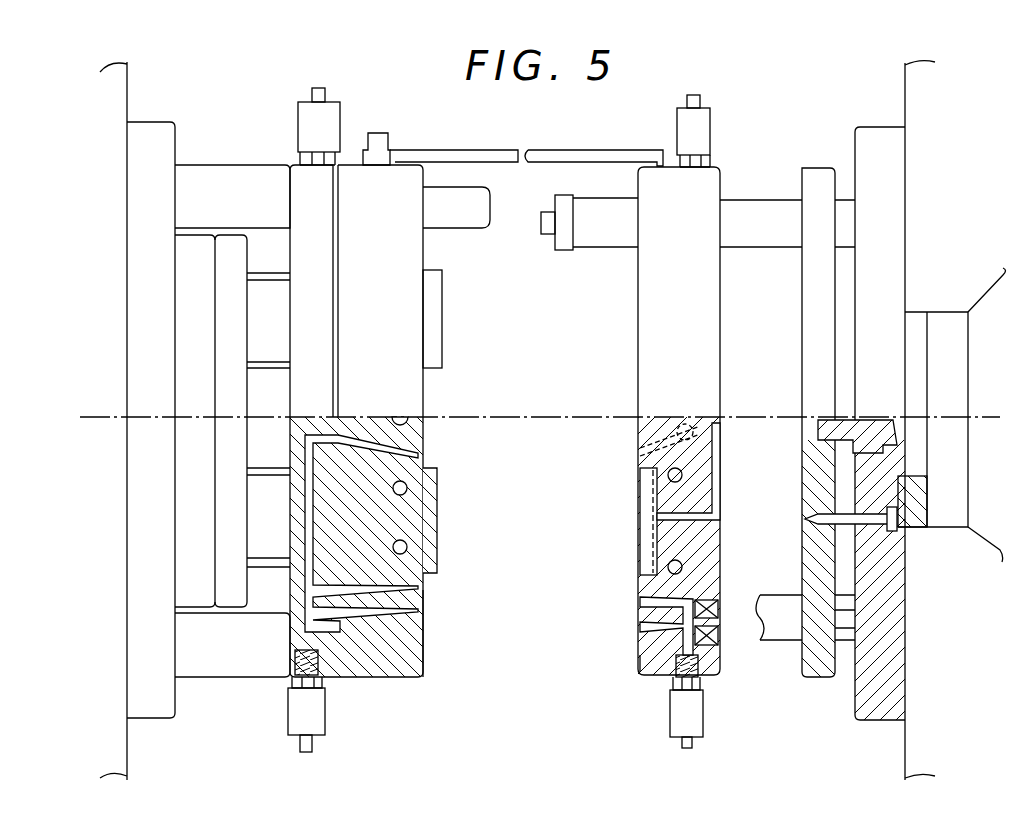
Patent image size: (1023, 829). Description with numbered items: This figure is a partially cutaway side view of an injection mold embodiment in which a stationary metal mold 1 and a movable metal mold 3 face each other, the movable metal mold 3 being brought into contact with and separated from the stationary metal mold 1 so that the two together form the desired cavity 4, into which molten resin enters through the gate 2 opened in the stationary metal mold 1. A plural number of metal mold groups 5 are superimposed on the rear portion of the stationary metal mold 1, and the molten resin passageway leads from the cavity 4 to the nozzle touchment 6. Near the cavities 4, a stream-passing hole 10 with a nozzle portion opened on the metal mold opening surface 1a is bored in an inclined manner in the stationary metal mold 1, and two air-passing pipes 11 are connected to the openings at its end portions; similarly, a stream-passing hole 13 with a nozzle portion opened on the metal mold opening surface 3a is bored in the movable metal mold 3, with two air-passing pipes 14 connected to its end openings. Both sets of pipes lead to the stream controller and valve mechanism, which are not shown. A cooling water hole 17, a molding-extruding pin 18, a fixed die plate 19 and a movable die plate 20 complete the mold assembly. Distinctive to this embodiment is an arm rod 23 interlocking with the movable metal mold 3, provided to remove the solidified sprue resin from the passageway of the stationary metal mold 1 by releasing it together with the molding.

The stationary metal mold 1 is at (650, 590).
The metal mold opening surface 1a is at (637, 655).
The gate 2 is at (660, 520).
The movable metal mold 3 is at (430, 503).
The metal mold opening surface 3a is at (423, 628).
The cavity 4 is at (655, 480).
The metal mold groups 5 is at (897, 355).
The nozzle touchment 6 is at (897, 428).
The stream-passing hole 10 is at (648, 432).
The air-passing pipes 11 is at (693, 95).
The stream-passing hole 13 is at (408, 456).
The air-passing pipes 14 is at (318, 90).
The cooling water hole 17 is at (406, 492).
The molding-extruding pin 18 is at (262, 365).
The fixed die plate 19 is at (905, 82).
The movable die plate 20 is at (130, 74).
The arm rod 23 is at (565, 150).